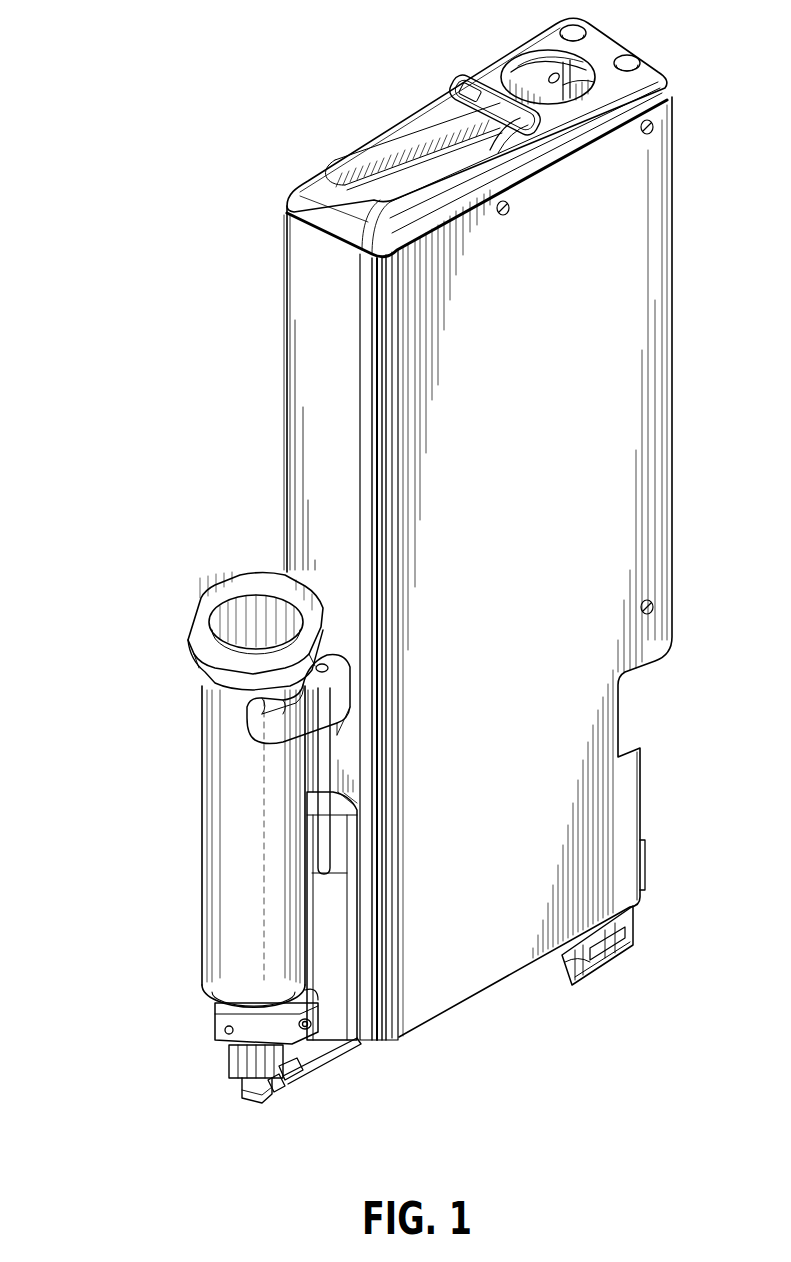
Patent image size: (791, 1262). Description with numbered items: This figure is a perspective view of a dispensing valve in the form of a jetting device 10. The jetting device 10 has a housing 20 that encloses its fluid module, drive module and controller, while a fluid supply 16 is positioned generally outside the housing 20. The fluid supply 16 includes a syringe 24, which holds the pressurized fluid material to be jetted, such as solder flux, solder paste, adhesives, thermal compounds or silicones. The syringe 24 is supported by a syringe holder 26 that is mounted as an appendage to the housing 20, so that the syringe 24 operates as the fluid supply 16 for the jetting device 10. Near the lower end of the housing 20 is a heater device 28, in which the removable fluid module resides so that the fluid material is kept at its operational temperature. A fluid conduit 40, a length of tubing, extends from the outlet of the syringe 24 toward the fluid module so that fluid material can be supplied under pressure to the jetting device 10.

The jetting device 10 is at (164, 161).
The fluid supply 16 is at (89, 705).
The housing 20 is at (663, 277).
The syringe 24 is at (209, 833).
The syringe holder 26 is at (215, 1016).
The heater device 28 is at (562, 960).
The fluid conduit 40 is at (338, 1053).